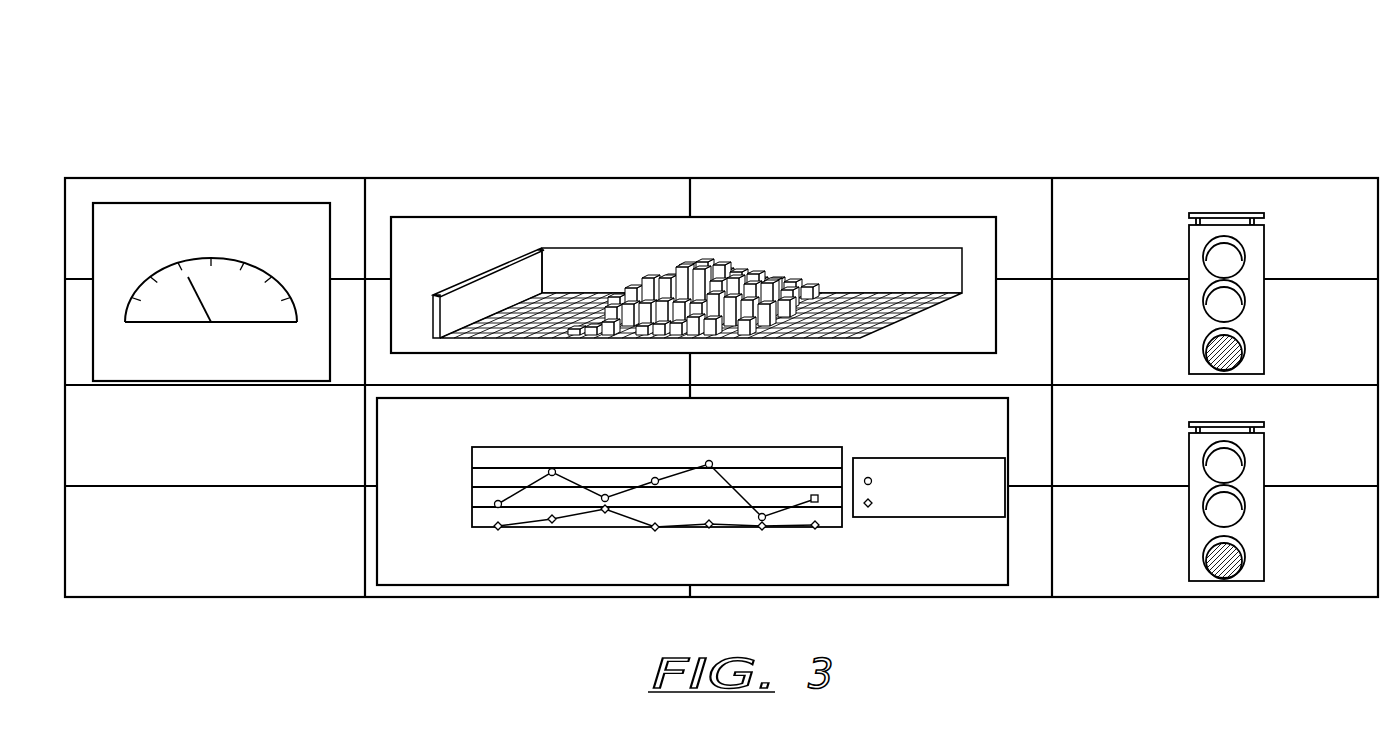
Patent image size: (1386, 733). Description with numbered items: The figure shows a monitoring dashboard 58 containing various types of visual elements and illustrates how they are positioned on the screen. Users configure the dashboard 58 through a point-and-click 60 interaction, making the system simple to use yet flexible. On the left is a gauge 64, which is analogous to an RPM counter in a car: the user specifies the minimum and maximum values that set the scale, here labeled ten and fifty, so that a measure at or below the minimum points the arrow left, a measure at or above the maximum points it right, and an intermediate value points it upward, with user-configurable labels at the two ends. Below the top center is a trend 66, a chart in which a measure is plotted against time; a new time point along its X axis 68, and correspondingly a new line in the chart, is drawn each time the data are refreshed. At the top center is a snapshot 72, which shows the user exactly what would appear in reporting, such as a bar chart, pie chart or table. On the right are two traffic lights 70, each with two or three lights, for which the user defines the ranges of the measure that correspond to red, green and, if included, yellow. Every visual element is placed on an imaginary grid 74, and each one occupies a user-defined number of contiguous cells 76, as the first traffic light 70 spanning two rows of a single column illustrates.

The monitoring dashboard 58 is at (721, 319).
The point-and-click 60 is at (721, 368).
The gauge 64 is at (211, 321).
The trend 66 is at (692, 513).
The X axis 68 is at (738, 508).
The traffic light 70 is at (1264, 397).
The snapshot 72 is at (693, 239).
The imaginary grid 74 is at (1085, 541).
The contiguous cells 76 is at (721, 362).